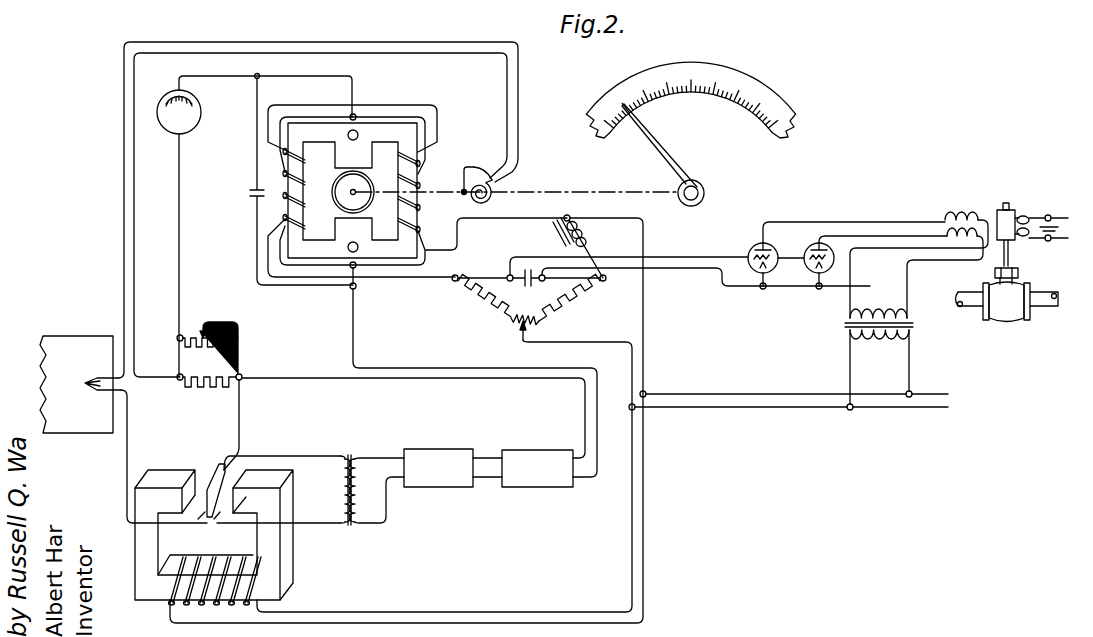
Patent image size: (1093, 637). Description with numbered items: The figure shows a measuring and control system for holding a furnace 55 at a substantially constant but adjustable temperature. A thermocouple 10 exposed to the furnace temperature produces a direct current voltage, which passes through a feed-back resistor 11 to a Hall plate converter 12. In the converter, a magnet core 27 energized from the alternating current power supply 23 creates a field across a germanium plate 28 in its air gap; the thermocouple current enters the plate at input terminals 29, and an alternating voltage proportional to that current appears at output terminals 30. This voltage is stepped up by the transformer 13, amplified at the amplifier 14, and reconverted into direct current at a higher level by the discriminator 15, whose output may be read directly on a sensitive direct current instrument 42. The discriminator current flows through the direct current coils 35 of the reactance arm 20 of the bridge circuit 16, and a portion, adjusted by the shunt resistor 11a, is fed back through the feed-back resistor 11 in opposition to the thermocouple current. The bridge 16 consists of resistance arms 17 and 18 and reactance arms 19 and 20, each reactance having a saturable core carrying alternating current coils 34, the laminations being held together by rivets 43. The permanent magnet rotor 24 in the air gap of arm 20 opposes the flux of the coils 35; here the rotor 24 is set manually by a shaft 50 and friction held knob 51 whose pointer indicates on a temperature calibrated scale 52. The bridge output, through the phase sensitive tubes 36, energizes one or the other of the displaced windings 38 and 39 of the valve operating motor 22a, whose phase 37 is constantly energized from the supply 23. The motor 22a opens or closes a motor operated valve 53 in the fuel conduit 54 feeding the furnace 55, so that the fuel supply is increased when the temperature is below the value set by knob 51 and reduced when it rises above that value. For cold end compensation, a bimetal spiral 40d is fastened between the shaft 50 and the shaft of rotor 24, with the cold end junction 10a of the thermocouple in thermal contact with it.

The thermocouple 10 is at (87, 380).
The cold end junction 10a is at (493, 178).
The feed-back resistor 11 is at (212, 389).
The shunt resistor 11a is at (202, 332).
The Hall plate converter 12 is at (229, 530).
The step-up transformer 13 is at (356, 541).
The amplifier 14 is at (435, 447).
The discriminator 15 is at (530, 448).
The bridge circuit 16 is at (500, 271).
The resistance arm 17 is at (476, 300).
The resistance arm 18 is at (574, 302).
The reactance arm 19 is at (584, 236).
The reactance arm 20 is at (373, 255).
The valve operating motor 22a is at (1012, 208).
The alternating current power supply 23 is at (920, 400).
The permanent magnet rotor 24 is at (335, 198).
The magnet core 27 is at (290, 566).
The Hall plate 28 is at (218, 500).
The input terminals 29 is at (200, 522).
The output terminals 30 is at (214, 522).
The alternating current coil 34 is at (412, 150).
The direct current winding coils 35 is at (414, 160).
The phase sensitive tubes 36 is at (798, 246).
The motor phase winding 37 is at (1032, 236).
The displaced winding 38 is at (957, 214).
The displaced winding 39 is at (949, 244).
The bimetal spiral 40d is at (492, 199).
The sensitive direct current instrument 42 is at (201, 122).
The rivets 43 is at (355, 130).
The shaft 50 is at (586, 192).
The friction held knob 51 is at (703, 186).
The temperature calibrated scale 52 is at (745, 72).
The motor operated valve 53 is at (1000, 312).
The conduit 54 is at (1044, 308).
The furnace 55 is at (85, 336).